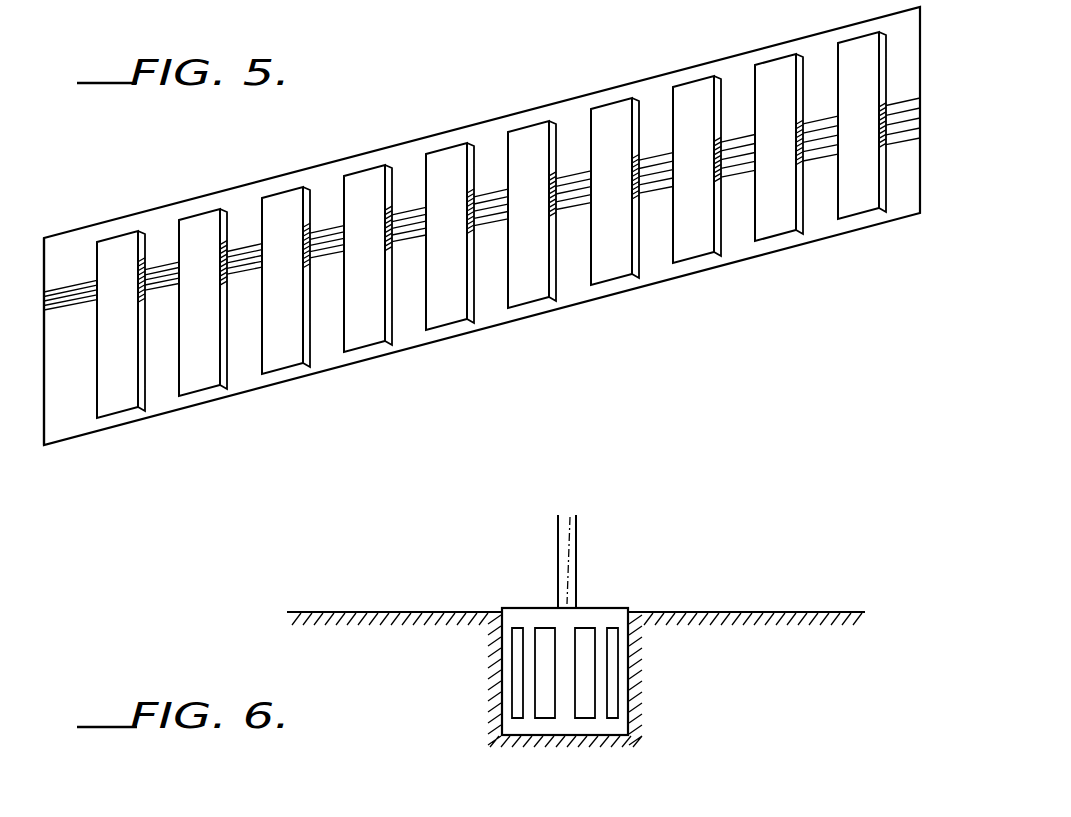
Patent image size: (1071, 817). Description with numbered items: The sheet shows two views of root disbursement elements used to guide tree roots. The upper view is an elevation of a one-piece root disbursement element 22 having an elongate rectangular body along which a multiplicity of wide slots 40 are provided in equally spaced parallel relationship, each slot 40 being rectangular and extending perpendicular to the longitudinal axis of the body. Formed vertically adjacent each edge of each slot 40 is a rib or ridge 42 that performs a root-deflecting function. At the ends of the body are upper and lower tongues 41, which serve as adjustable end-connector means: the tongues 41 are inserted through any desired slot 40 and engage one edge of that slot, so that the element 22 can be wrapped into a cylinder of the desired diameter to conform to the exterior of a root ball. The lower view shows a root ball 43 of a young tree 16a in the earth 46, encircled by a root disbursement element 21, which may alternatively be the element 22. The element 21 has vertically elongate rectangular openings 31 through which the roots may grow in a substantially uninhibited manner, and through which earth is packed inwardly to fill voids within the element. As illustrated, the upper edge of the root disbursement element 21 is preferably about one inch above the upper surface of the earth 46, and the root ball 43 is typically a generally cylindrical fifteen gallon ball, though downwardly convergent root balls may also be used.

In FIG. 5, the root disbursement element 22 is at (470, 90).
In FIG. 5, the wide slots 40 is at (120, 400).
In FIG. 5, the tongues 41 is at (57, 252).
In FIG. 5, the rib 42 is at (145, 240).
In FIG. 6, the young tree 16a is at (571, 566).
In FIG. 6, the root disbursement element 21 is at (625, 606).
In FIG. 6, the openings 31 is at (610, 720).
In FIG. 6, the root ball 43 is at (613, 658).
In FIG. 6, the earth 46 is at (400, 612).